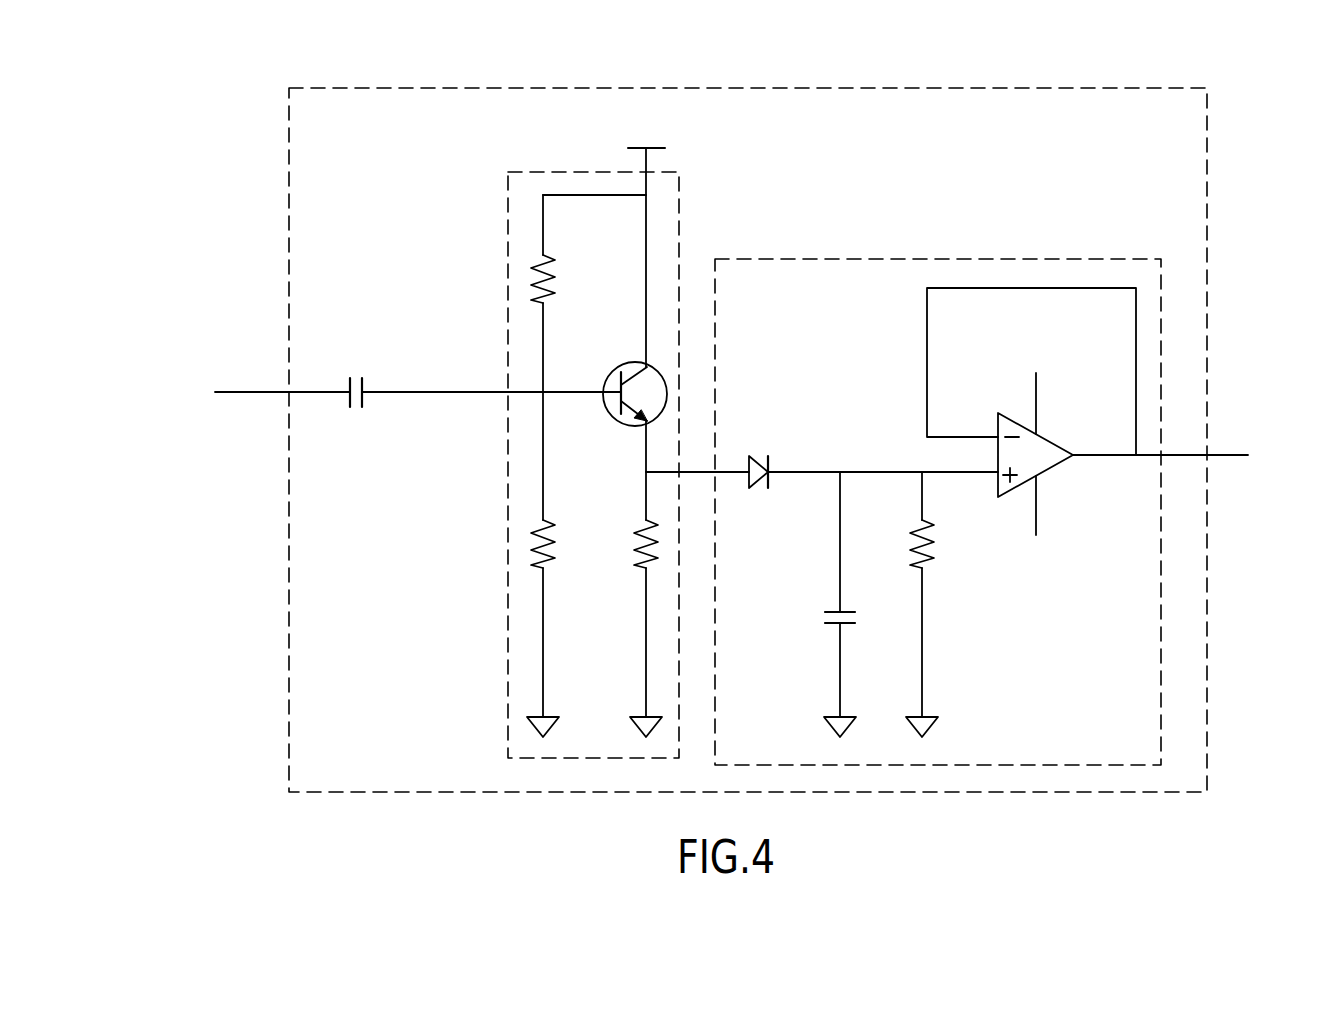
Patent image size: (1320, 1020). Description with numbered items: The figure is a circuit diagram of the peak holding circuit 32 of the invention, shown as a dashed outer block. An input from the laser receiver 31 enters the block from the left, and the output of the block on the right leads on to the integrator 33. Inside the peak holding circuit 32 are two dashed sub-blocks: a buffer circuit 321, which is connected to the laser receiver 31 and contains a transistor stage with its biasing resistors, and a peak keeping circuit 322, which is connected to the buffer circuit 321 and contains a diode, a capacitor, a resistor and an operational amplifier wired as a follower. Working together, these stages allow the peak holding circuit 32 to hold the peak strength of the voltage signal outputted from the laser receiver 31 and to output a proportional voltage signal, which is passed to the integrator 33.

The laser receiver 31 is at (399, 391).
The peak holding circuit 32 is at (882, 87).
The buffer circuit 321 is at (682, 220).
The peak keeping circuit 322 is at (957, 259).
The integrator 33 is at (1179, 457).